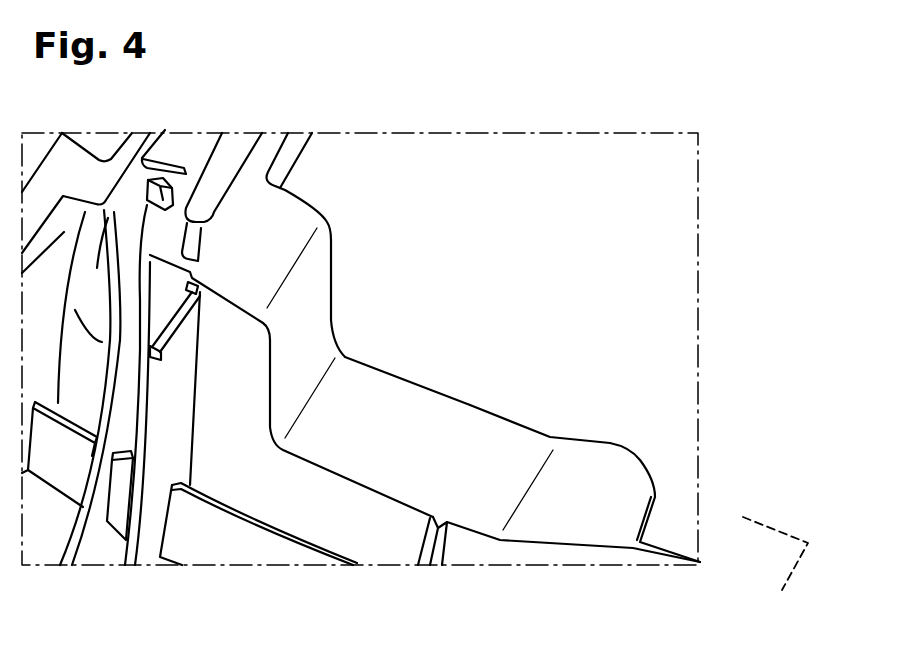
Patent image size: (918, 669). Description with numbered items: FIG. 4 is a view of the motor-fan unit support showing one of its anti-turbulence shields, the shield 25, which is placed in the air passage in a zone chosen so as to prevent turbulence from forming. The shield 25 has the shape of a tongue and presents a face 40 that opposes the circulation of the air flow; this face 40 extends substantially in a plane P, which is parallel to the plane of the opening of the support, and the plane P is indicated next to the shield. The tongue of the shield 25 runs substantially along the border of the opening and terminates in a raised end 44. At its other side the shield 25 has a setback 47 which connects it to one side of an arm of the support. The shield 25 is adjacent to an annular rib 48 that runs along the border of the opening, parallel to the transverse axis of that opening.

The setback 47 is at (303, 320).
The face 40 is at (373, 432).
The anti-turbulence shield 25 is at (460, 447).
The raised end 44 is at (600, 490).
The annular rib 48 is at (482, 550).
The plane P is at (773, 555).